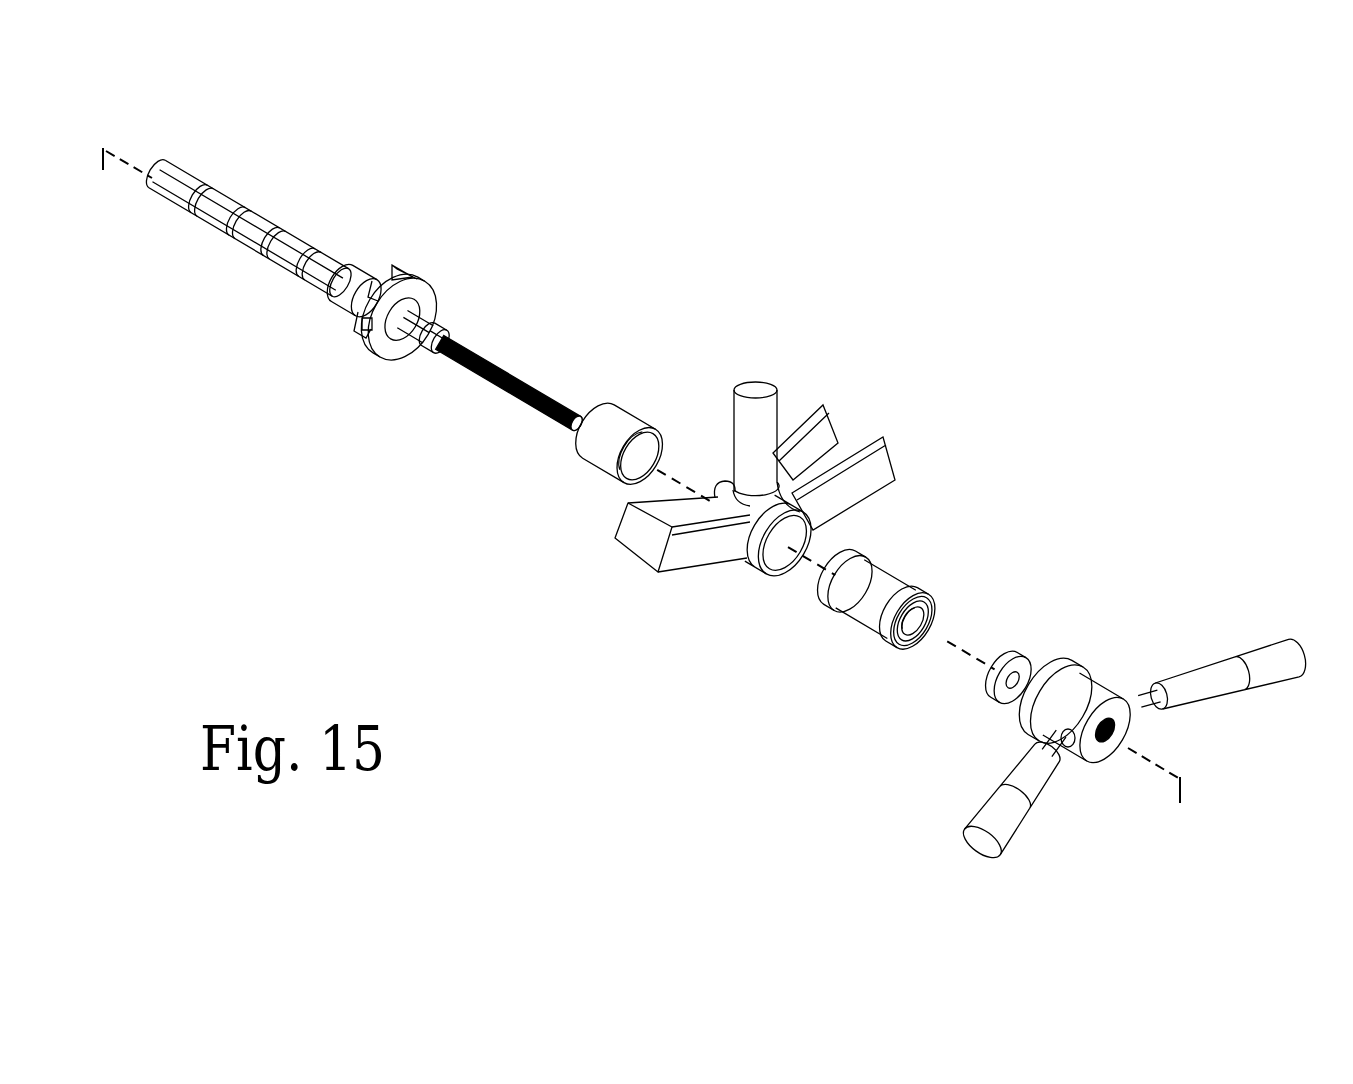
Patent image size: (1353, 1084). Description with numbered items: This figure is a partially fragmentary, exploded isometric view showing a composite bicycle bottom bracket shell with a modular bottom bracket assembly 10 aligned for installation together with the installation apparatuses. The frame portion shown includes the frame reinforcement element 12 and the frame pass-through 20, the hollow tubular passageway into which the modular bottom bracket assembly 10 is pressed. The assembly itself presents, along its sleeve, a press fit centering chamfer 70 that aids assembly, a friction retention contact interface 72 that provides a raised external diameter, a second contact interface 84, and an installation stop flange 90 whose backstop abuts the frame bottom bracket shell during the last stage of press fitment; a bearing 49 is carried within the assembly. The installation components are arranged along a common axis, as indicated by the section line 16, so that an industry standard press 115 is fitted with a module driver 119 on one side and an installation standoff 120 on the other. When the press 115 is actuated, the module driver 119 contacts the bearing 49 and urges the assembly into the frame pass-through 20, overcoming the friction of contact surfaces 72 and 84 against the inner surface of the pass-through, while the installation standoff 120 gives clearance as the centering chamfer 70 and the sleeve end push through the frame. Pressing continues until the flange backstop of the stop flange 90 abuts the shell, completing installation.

The modular bottom bracket bearing assembly 10 is at (882, 580).
The frame reinforcement element 12 is at (760, 418).
The section line 16 is at (644, 495).
The frame pass-through 20 is at (777, 562).
The bearing 49 is at (913, 653).
The centering chamfer 70 is at (803, 556).
The friction retention contact interface 72 is at (832, 603).
The contact interface 84 is at (888, 623).
The installation stop flange 90 is at (925, 600).
The industry standard press 115 is at (432, 297).
The module driver 119 is at (1028, 660).
The installation standoff 120 is at (628, 425).